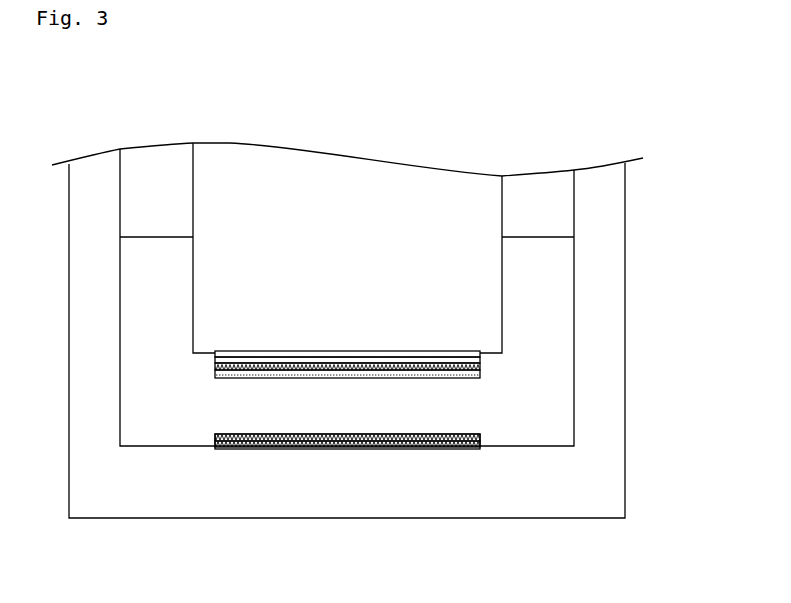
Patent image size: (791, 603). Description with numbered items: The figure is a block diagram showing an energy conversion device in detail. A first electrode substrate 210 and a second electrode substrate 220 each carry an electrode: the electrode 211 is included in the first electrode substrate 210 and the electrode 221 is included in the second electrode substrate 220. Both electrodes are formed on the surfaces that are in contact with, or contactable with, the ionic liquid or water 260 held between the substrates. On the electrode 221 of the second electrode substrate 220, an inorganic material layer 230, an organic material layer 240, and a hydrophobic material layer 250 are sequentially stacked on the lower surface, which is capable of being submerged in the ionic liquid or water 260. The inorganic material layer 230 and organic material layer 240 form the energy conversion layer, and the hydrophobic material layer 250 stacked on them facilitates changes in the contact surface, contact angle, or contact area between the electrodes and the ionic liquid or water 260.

The first electrode substrate 210 is at (590, 496).
The electrode 211 is at (343, 449).
The second electrode substrate 220 is at (451, 199).
The electrode 221 is at (252, 357).
The inorganic material layer 230 is at (304, 363).
The organic material layer 240 is at (356, 369).
The hydrophobic material layer 250 is at (407, 373).
The ionic liquid or water 260 is at (560, 307).